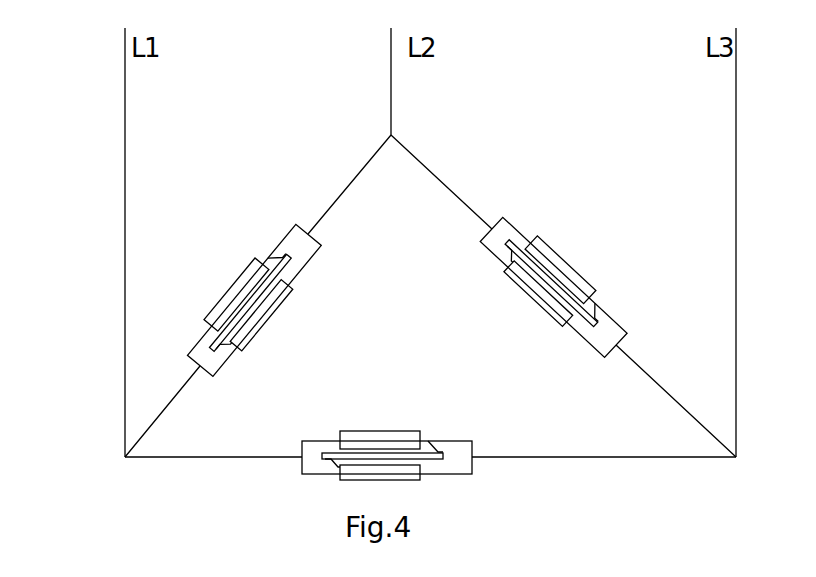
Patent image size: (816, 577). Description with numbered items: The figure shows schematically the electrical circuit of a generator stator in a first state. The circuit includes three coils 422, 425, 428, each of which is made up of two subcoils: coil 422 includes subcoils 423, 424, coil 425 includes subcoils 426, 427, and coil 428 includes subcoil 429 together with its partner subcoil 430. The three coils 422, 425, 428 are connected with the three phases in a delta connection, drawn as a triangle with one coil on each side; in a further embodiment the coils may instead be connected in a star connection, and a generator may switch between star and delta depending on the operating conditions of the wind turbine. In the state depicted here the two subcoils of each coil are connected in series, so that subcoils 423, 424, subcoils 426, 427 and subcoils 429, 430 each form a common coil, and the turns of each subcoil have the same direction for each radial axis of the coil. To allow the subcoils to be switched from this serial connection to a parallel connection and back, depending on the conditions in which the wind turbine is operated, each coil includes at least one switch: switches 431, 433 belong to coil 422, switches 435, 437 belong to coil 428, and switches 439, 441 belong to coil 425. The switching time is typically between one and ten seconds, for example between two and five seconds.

The coil 422 is at (227, 267).
The subcoil 423 is at (255, 328).
The subcoil 424 is at (252, 268).
The coil 425 is at (378, 417).
The subcoil 426 is at (395, 433).
The subcoil 427 is at (395, 480).
The coil 428 is at (567, 225).
The subcoil 429 is at (556, 306).
The contact element 430 is at (553, 265).
The switch 431 is at (272, 246).
The switch 433 is at (233, 357).
The switch 435 is at (493, 257).
The switch 437 is at (613, 307).
The switch 439 is at (443, 439).
The switch 441 is at (325, 481).